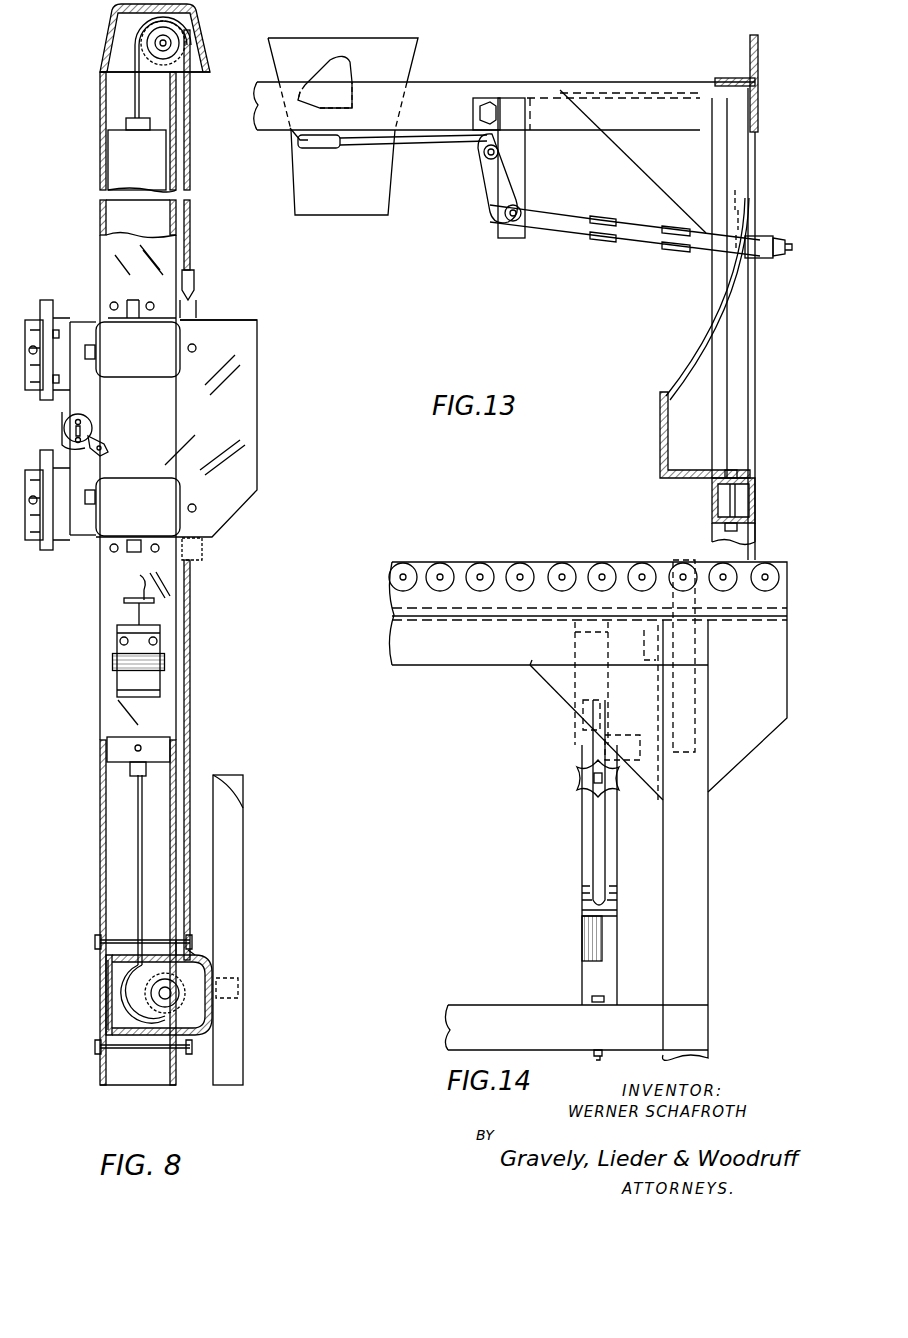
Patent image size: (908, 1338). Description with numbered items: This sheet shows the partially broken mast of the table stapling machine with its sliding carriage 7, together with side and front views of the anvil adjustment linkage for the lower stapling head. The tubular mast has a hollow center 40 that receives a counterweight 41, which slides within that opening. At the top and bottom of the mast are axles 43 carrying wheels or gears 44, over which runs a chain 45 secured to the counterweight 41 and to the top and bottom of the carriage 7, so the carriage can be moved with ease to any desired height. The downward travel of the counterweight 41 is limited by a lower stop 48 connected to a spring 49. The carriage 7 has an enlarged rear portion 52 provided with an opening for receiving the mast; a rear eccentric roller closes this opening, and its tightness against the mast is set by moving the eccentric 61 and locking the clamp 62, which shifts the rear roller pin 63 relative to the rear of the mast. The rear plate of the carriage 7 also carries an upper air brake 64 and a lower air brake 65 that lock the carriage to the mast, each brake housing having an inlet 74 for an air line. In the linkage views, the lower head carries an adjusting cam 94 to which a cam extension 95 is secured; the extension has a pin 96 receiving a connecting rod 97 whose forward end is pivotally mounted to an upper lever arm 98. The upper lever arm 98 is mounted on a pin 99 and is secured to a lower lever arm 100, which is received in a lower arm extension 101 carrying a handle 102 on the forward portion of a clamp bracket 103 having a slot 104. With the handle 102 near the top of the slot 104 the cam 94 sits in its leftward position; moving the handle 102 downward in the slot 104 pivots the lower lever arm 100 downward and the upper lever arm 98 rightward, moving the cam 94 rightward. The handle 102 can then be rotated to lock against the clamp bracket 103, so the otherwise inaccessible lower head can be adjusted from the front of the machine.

In FIG. 8, the carriage 7 is at (244, 318).
In FIG. 8, the hollow center 40 is at (112, 103).
In FIG. 8, the counterweight 41 is at (120, 166).
In FIG. 8, the axles 43 is at (168, 42).
In FIG. 8, the wheels or gears 44 is at (163, 45).
In FIG. 8, the chain 45 is at (190, 115).
In FIG. 8, the lower stop 48 is at (142, 594).
In FIG. 8, the spring 49 is at (130, 660).
In FIG. 8, the enlarged rear portion 52 is at (226, 510).
In FIG. 8, the eccentric 61 is at (58, 430).
In FIG. 8, the clamp 62 is at (108, 445).
In FIG. 8, the rear roller pin 63 is at (84, 426).
In FIG. 8, the upper air brake 64 is at (38, 345).
In FIG. 8, the lower air brake 65 is at (40, 528).
In FIG. 8, the inlet 74 is at (40, 352).
In FIG. 13, the adjusting cam 94 is at (350, 75).
In FIG. 13, the cam extension 95 is at (296, 138).
In FIG. 13, the pin 96 is at (302, 150).
In FIG. 13, the connecting rod 97 is at (384, 148).
In FIG. 13, the upper lever arm 98 is at (490, 185).
In FIG. 13, the pin 99 is at (505, 222).
In FIG. 13, the lower lever arm 100 is at (566, 236).
In FIG. 13, the lower arm extension 101 is at (641, 242).
In FIG. 13, the handle 102 is at (776, 262).
In FIG. 14, the handle 102 is at (578, 780).
In FIG. 13, the clamp bracket 103 is at (662, 412).
In FIG. 14, the clamp bracket 103 is at (582, 880).
In FIG. 13, the slot 104 is at (700, 366).
In FIG. 14, the slot 104 is at (600, 864).